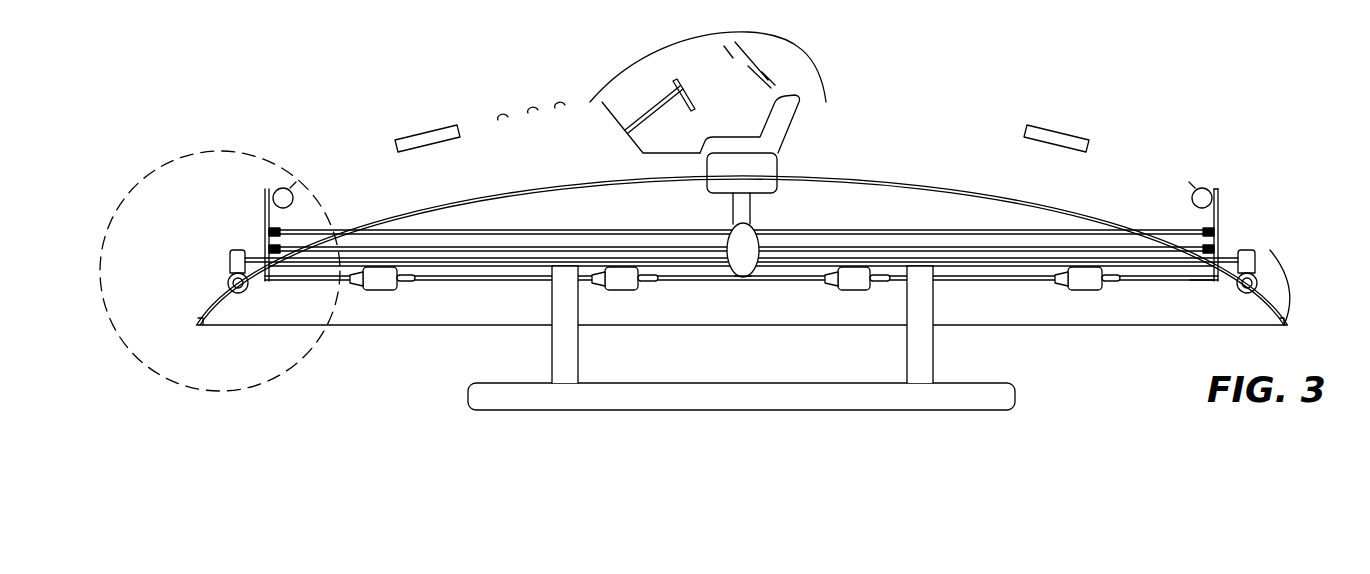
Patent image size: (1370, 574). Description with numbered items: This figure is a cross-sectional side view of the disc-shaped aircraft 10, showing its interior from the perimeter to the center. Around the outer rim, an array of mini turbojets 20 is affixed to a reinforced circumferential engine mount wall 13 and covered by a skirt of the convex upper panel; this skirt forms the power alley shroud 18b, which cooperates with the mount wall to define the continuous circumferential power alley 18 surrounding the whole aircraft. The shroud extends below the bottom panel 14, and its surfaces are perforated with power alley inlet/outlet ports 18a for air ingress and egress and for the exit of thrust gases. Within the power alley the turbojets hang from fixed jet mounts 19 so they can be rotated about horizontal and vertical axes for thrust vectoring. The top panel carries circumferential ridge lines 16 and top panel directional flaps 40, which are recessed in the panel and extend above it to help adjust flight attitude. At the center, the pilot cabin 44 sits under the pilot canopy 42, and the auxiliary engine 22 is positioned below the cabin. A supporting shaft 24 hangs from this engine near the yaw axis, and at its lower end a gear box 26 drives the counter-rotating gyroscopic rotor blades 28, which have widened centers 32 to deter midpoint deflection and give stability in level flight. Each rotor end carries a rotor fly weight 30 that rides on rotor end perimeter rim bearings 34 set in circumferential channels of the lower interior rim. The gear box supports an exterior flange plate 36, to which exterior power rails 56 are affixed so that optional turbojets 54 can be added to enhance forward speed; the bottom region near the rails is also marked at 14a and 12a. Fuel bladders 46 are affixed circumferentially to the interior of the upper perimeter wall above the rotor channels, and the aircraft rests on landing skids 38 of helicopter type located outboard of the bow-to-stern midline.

The disc-shaped aircraft 10 is at (222, 84).
The base direction arrow 12a is at (1271, 322).
The reinforced circumferential engine mount wall 13 is at (1222, 232).
The bottom panel 14 is at (445, 282).
The frame rail end 14a is at (1198, 280).
The top panel circumferential ridge lines 16 is at (535, 107).
The power alley 18 is at (1277, 271).
The power alley inlet/outlet ports 18a is at (199, 258).
The power alley shroud 18b is at (227, 283).
The jet mounts 19 is at (259, 246).
The mini turbojets 20 is at (201, 302).
The auxiliary engine 22 is at (775, 172).
The supporting shaft 24 is at (751, 212).
The gear box for counter-rotating gyroscopic rotor blades 26 is at (728, 242).
The counter-rotating gyroscopic rotor blades 28 is at (437, 247).
The rotor fly weights 30 is at (266, 203).
The widened centers of gyroscopic rotor blades 32 is at (613, 247).
The rotor end perimeter rim bearings 34 is at (260, 275).
The exterior flange plate 36 is at (755, 282).
The landing skids 38 is at (1016, 397).
The top panel directional flaps 40 is at (410, 132).
The pilot canopy 42 is at (822, 72).
The pilot cabin 44 is at (732, 118).
The fuel bladders 46 is at (286, 190).
The optional turbojets on power rails 54 is at (382, 291).
The exterior power rails 56 is at (495, 282).